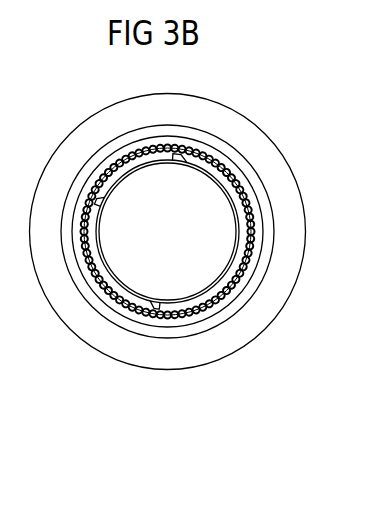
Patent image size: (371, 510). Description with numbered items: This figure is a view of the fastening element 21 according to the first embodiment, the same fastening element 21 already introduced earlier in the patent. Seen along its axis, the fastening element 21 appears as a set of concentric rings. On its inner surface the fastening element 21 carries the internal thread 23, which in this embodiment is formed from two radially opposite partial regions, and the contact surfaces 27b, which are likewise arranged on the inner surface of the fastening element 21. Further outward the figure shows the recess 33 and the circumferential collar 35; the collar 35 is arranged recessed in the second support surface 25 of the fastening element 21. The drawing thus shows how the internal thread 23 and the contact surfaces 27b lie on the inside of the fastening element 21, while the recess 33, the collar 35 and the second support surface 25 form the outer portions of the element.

The fastening element 21 is at (280, 154).
The second support surface 25 is at (283, 278).
The recess 33 is at (265, 213).
The circumferential collar 35 is at (117, 160).
The contact surface 27b is at (223, 295).
The internal thread 23 is at (190, 166).